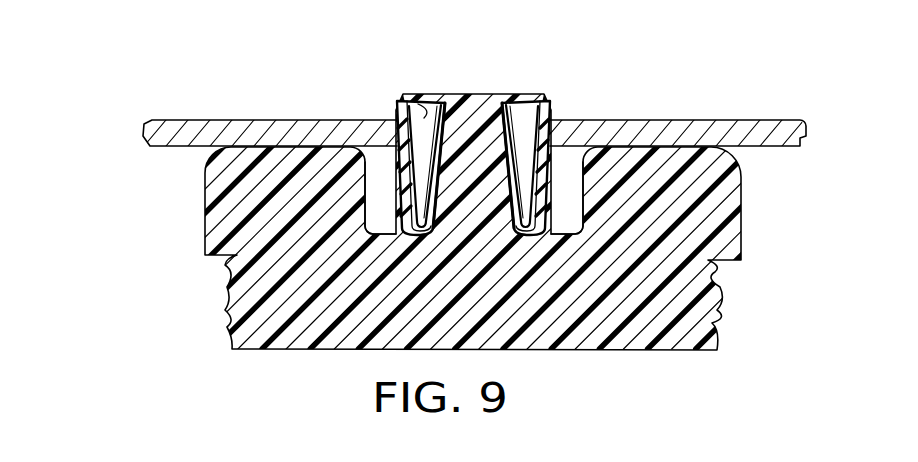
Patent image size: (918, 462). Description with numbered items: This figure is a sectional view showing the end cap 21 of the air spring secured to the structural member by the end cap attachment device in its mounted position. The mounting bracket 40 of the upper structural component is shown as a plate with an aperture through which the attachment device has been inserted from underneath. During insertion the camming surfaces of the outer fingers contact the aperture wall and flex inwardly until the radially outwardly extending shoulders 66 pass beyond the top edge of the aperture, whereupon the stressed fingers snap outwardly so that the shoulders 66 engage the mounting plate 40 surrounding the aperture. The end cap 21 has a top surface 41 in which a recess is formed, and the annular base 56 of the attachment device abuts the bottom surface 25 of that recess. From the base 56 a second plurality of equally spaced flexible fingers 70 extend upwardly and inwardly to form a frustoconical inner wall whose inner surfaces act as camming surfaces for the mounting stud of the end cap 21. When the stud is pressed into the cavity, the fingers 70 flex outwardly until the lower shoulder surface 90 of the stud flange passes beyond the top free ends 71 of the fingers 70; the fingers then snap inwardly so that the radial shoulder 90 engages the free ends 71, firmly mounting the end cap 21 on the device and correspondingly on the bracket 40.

The end cap 21 is at (198, 230).
The bottom surface 25 is at (388, 236).
The mounting bracket 40 is at (208, 132).
The top surface 41 is at (663, 147).
The annular base 56 is at (537, 231).
The shoulder 66 is at (562, 119).
The flexible fingers 70 is at (400, 110).
The free ends 71 is at (499, 97).
The lower shoulder surface 90 is at (420, 112).